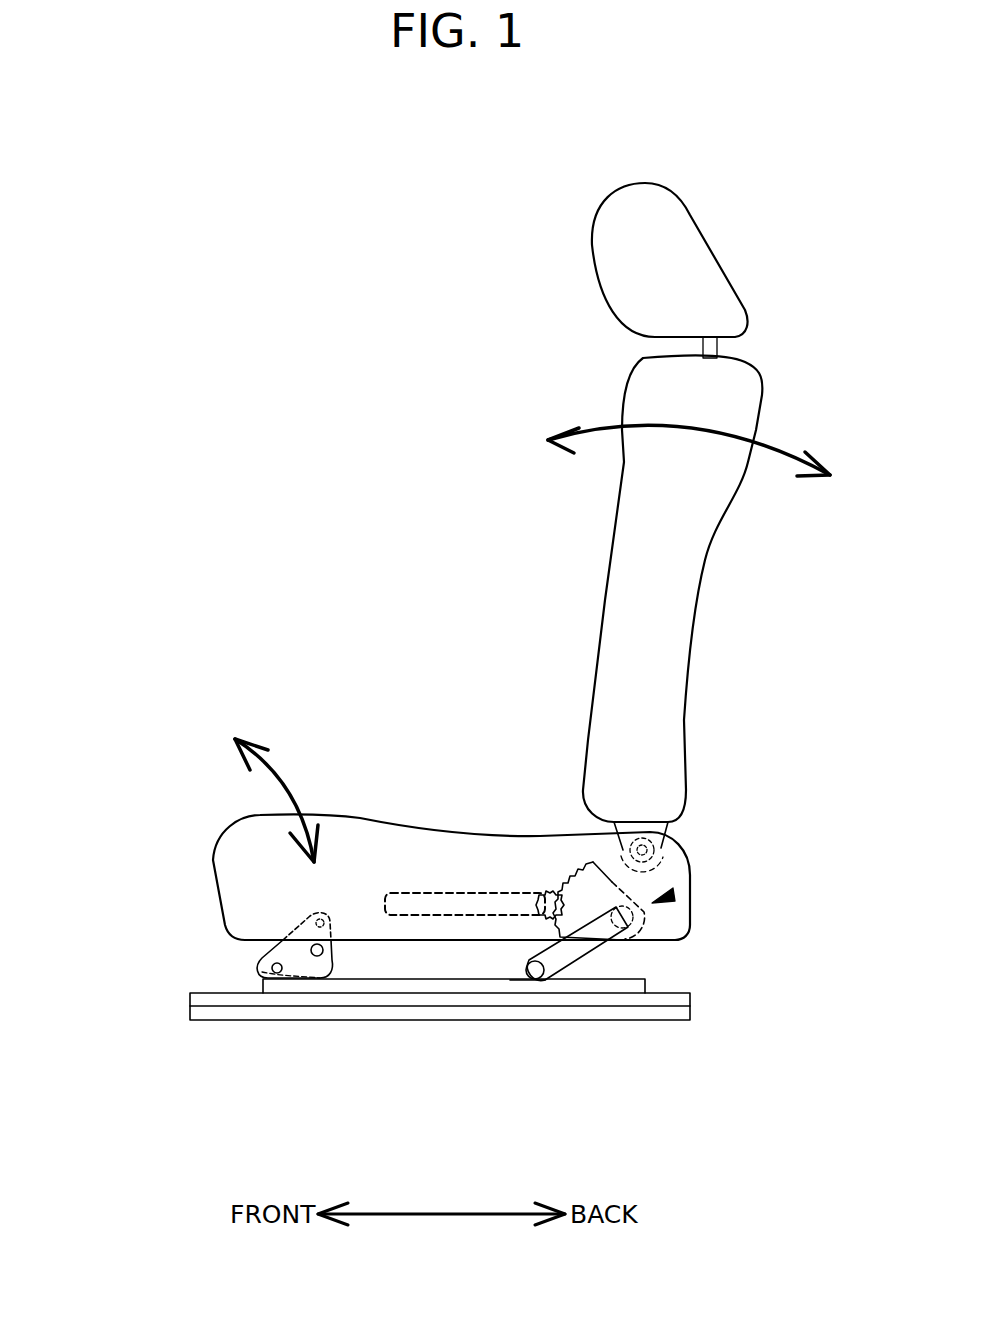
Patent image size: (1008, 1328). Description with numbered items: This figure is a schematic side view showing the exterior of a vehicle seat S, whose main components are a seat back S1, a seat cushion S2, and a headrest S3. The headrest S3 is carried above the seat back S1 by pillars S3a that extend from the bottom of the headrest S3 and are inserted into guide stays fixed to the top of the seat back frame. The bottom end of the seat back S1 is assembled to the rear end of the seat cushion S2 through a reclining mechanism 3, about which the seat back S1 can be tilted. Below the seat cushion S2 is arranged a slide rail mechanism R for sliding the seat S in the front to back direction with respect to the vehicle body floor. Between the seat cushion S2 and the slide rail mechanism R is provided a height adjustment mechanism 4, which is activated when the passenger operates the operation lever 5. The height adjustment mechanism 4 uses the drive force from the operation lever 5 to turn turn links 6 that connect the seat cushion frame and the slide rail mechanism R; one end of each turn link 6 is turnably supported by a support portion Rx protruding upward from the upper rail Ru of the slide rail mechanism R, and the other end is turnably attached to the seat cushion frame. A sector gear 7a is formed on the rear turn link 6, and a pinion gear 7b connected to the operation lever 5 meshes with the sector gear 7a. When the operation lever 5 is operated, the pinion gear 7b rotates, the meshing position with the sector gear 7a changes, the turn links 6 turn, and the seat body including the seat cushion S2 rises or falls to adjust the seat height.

The seat S is at (276, 185).
The seat back S1 is at (742, 400).
The seat cushion S2 is at (238, 846).
The headrest S3 is at (685, 250).
The pillars S3a is at (722, 345).
The reclining mechanism 3 is at (655, 849).
The height adjustment mechanism 4 is at (673, 895).
The operation lever 5 is at (430, 900).
The turn links 6 is at (332, 955).
The sector gear 7a is at (562, 870).
The pinion gear 7b is at (538, 900).
The slide rail mechanism R is at (356, 1019).
The support portion Rx is at (262, 975).
The upper rail Ru is at (435, 985).